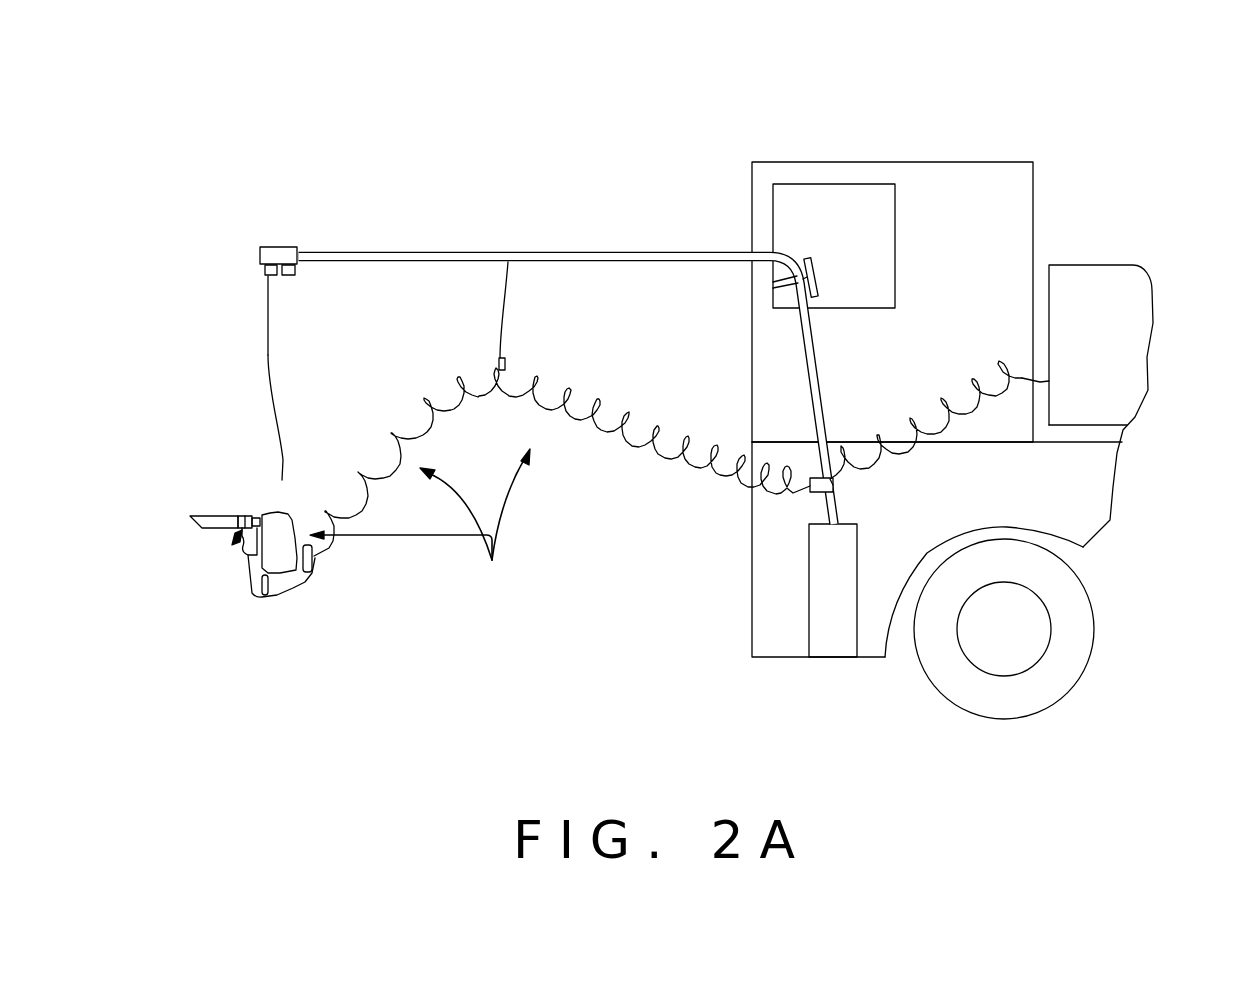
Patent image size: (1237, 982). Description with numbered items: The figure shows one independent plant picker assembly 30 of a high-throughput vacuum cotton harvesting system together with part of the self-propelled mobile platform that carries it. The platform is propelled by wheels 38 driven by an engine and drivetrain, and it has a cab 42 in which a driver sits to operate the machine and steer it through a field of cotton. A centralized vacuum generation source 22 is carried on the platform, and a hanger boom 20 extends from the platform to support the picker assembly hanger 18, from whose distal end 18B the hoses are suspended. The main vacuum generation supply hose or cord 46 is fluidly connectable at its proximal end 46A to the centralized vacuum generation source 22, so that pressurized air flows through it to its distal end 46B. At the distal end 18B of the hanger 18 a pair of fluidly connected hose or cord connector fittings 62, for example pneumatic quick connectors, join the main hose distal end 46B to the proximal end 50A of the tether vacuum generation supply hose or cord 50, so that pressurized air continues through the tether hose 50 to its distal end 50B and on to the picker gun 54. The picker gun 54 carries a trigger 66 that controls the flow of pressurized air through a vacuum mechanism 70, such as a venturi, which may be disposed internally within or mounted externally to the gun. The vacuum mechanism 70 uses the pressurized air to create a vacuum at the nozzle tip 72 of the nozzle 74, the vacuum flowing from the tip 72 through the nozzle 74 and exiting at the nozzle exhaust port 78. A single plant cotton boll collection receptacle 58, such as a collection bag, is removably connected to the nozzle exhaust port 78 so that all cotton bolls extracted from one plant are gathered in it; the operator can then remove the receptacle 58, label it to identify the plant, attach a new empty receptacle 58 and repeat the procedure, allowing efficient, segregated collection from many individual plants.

The picker assembly hanger 18 is at (547, 253).
The distal end of picker assembly hanger 18B is at (313, 248).
The hanger boom 20 is at (827, 602).
The centralized vacuum generation source 22 is at (1083, 292).
The independent plant picker assembly 30 is at (420, 524).
The wheel 38 is at (958, 677).
The cab 42 is at (882, 177).
The main vacuum generation supply hose or cord 46 is at (763, 409).
The proximal end of main vacuum generation supply hose 46A is at (1047, 375).
The distal end of main vacuum generation supply hose 46B is at (247, 570).
The tether vacuum generation supply hose or cord 50 is at (256, 378).
The proximal end of tether vacuum generation supply hose 50A is at (267, 290).
The distal end of tether vacuum generation supply hose 50B is at (283, 457).
The picker gun 54 is at (200, 527).
The single plant cotton boll collection receptacle 58 is at (283, 552).
The hose or cord connector fittings 62 is at (265, 270).
The trigger 66 is at (232, 542).
The vacuum mechanism 70 is at (247, 518).
The nozzle tip 72 is at (157, 506).
The nozzle 74 is at (212, 514).
The nozzle exhaust port 78 is at (258, 513).